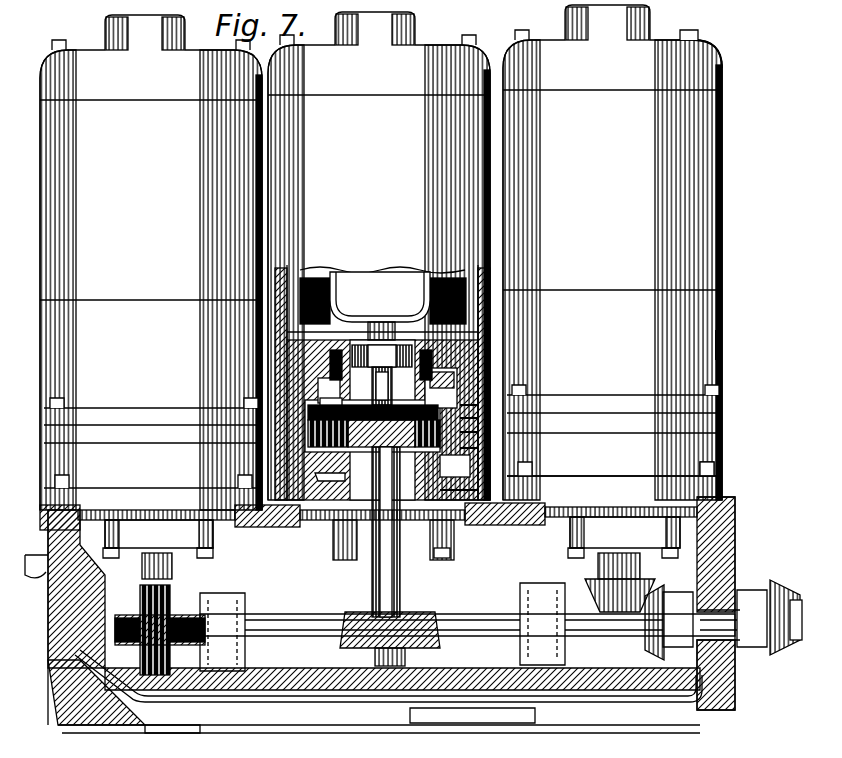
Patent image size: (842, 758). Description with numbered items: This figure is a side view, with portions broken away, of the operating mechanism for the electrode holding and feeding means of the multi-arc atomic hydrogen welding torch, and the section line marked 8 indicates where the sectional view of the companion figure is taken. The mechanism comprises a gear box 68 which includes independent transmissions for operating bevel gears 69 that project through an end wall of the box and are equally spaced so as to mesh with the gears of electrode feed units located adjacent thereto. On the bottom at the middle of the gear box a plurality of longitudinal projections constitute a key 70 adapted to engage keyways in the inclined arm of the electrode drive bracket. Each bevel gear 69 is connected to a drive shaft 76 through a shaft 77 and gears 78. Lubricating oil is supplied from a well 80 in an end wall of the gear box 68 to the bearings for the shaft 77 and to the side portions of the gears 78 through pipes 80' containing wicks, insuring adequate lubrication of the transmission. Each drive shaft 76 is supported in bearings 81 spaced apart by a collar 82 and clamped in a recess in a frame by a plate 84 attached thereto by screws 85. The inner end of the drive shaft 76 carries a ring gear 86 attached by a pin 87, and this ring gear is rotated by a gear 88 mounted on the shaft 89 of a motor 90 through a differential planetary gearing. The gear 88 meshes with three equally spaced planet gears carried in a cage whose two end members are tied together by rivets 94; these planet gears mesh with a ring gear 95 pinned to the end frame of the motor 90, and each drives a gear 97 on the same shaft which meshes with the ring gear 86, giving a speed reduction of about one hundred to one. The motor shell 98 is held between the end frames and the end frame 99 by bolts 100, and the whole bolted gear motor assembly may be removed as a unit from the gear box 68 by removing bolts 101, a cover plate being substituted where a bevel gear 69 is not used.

The gear box 68 is at (735, 506).
The bevel gear 69 is at (786, 658).
The key 70 is at (475, 722).
The drive shaft 76 is at (174, 570).
The shaft 77 is at (278, 614).
The gear 78 is at (172, 741).
The well 80 is at (356, 621).
The pipe 80' is at (384, 668).
The bearing 81 is at (385, 546).
The collar 82 is at (370, 548).
The plate 84 is at (442, 540).
The screw 85 is at (436, 552).
The ring gear 86 is at (492, 450).
The pin 87 is at (330, 480).
The gear 88 is at (382, 386).
The motor shaft 89 is at (382, 356).
The motor 90 is at (380, 297).
The rivet 94 is at (331, 419).
The ring gear 95 is at (492, 406).
The gear 97 is at (492, 420).
The motor shell 98 is at (722, 180).
The end frame 99 is at (722, 72).
The bolt 100 is at (700, 42).
The bolt 101 is at (728, 462).
The section line 8- 8 is at (768, 540).